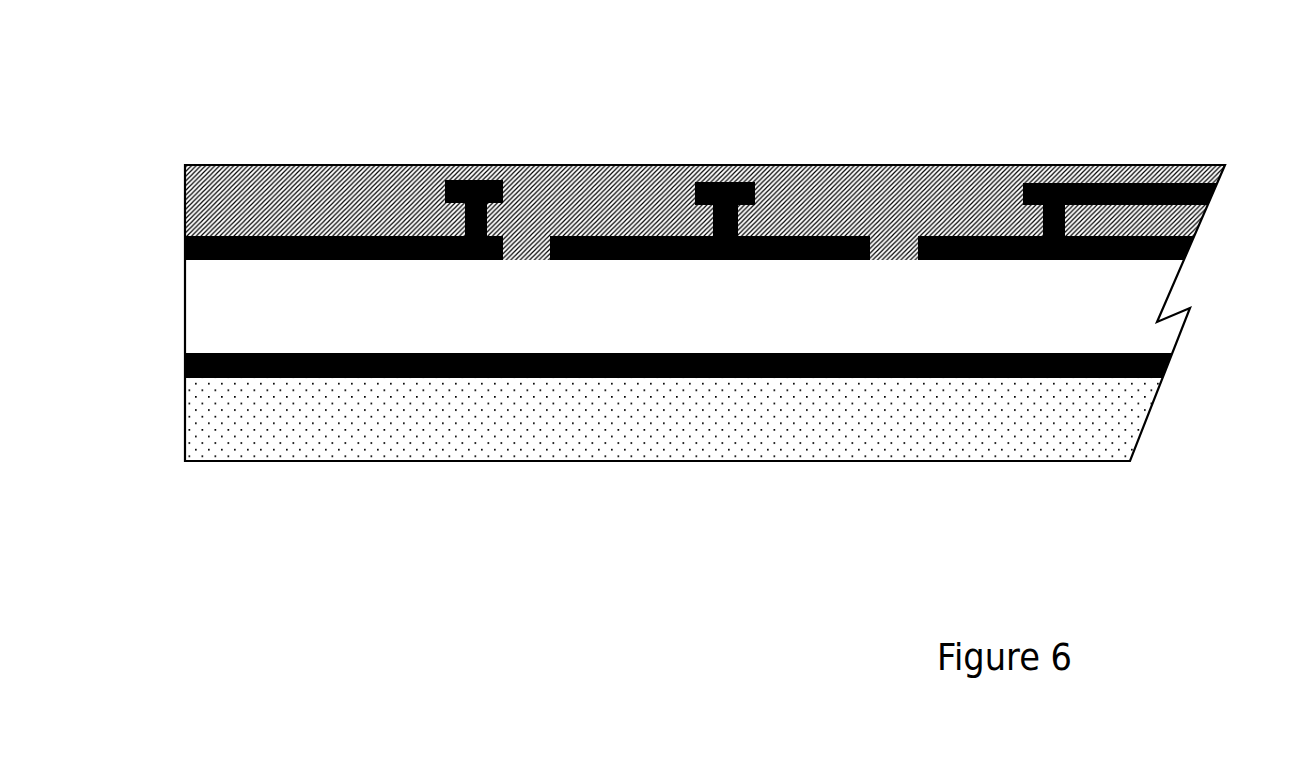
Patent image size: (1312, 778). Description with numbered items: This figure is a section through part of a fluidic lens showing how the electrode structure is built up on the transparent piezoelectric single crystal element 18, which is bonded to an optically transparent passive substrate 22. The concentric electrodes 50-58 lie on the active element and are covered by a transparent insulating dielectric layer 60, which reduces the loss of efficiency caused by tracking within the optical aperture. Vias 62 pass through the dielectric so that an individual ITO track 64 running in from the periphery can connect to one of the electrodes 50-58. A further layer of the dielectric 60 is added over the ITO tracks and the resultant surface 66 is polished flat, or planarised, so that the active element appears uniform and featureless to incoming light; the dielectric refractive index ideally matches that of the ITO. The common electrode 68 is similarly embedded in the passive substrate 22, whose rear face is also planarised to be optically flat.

The transparent piezoelectric single crystal element 18 is at (1123, 325).
The optically transparent passive substrate 22 is at (1097, 427).
The electrodes 50-58 is at (353, 262).
The transparent insulating dielectric layer 60 is at (327, 190).
The vias 62 is at (710, 222).
The ITO track 64 is at (1133, 178).
The surface 66 is at (705, 297).
The common electrode 68 is at (187, 365).